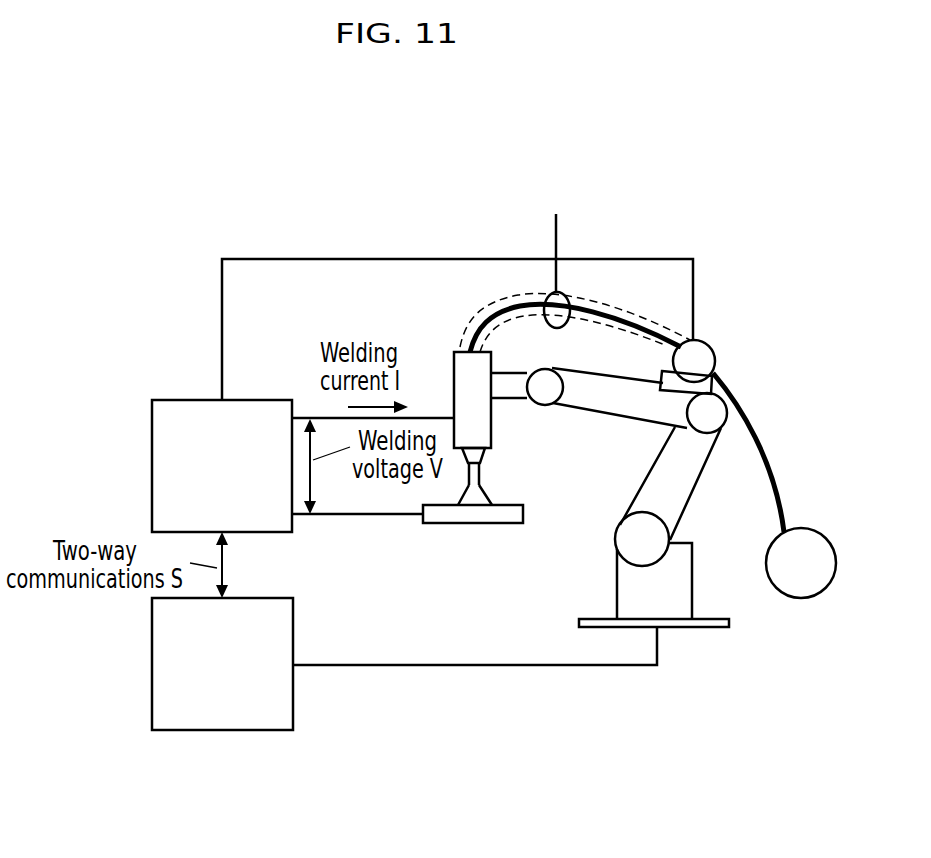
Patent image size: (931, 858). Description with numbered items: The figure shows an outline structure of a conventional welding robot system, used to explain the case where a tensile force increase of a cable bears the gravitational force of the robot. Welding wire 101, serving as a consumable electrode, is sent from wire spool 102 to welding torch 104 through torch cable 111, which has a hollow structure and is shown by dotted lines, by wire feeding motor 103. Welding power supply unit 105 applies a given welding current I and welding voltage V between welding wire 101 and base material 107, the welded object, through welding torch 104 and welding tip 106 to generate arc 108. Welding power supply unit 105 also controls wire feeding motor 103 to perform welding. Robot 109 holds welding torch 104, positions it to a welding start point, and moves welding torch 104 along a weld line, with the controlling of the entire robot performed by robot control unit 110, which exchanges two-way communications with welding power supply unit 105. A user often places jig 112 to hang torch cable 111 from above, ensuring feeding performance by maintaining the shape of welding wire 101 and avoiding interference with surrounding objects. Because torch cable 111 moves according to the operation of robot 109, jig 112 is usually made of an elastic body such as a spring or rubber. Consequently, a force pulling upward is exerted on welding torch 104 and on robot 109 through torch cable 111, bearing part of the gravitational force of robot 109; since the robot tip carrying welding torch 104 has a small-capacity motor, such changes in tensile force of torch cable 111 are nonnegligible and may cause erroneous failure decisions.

The welding wire 101 is at (480, 473).
The wire spool 102 is at (798, 598).
The wire feeding motor 103 is at (708, 343).
The welding torch 104 is at (454, 387).
The welding power supply unit 105 is at (152, 448).
The welding tip 106 is at (483, 455).
The base material 107 is at (444, 525).
The arc 108 is at (490, 497).
The robot 109 is at (613, 537).
The robot control unit 110 is at (152, 682).
The torch cable 111 is at (493, 308).
The jig 112 is at (553, 237).